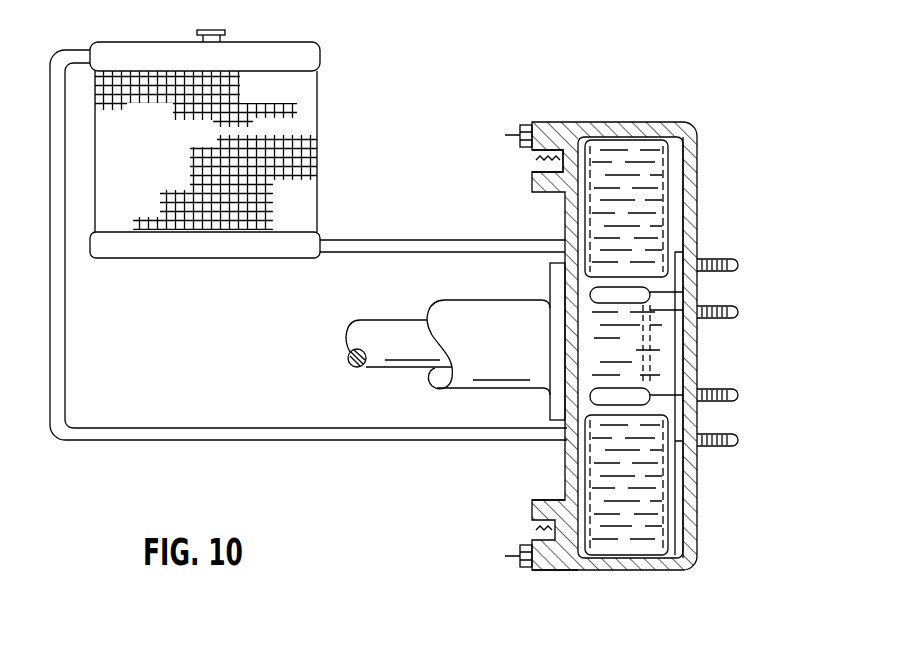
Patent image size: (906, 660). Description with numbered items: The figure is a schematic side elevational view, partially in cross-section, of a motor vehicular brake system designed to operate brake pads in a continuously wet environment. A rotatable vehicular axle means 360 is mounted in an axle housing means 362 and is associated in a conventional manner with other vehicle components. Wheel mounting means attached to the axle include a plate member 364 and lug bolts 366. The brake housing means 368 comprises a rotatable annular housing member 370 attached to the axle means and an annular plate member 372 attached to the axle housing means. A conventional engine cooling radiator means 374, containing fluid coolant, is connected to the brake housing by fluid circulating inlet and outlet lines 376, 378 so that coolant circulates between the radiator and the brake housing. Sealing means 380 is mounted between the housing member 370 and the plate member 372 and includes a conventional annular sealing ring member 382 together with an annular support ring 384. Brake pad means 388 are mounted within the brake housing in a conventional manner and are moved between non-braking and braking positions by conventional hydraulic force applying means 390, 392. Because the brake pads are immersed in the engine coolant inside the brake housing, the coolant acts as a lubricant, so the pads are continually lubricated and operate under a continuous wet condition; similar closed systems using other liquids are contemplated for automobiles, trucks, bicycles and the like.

The rotatable vehicular axle means 360 is at (382, 355).
The axle housing means 362 is at (440, 315).
The plate member 364 is at (677, 345).
The lug bolts 366 is at (738, 312).
The brake housing means 368 is at (688, 118).
The rotatable annular housing member 370 is at (696, 150).
The annular plate member 372 is at (562, 195).
The engine cooling radiator means 374 is at (318, 46).
The fluid circulating inlet line 376 is at (205, 437).
The fluid circulating outlet line 378 is at (405, 250).
The sealing means 380 is at (528, 572).
The annular sealing ring member 382 is at (530, 528).
The annular support ring 384 is at (525, 540).
The brake pad means 388 is at (673, 500).
The hydraulic force applying means 390 is at (685, 291).
The hydraulic force applying means 392 is at (650, 400).